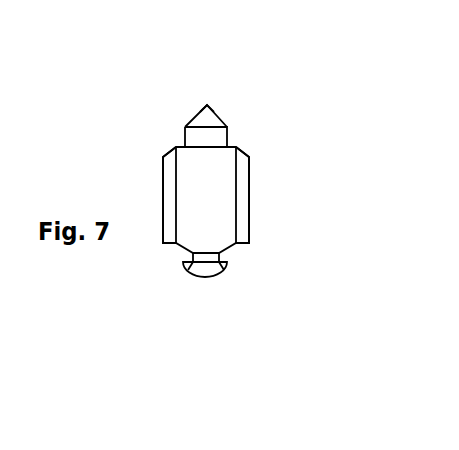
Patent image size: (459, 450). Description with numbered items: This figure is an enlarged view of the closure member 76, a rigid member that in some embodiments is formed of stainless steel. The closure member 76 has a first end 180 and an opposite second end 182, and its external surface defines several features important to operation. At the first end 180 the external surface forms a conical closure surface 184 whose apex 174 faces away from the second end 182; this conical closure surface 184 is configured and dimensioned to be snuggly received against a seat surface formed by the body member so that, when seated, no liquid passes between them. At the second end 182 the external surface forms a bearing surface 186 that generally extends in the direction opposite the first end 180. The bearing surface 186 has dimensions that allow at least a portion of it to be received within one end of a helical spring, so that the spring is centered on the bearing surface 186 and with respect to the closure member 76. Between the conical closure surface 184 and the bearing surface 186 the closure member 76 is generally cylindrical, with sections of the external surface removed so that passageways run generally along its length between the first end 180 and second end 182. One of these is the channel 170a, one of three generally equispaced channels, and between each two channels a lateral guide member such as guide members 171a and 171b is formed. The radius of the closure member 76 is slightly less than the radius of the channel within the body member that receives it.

The closure member 76 is at (310, 177).
The channel 170a is at (215, 177).
The lateral guide member 171a is at (249, 222).
The lateral guide member 171b is at (175, 191).
The apex 174 is at (218, 98).
The first end 180 is at (199, 129).
The second end 182 is at (193, 272).
The conical closure surface 184 is at (204, 113).
The bearing surface 186 is at (223, 272).